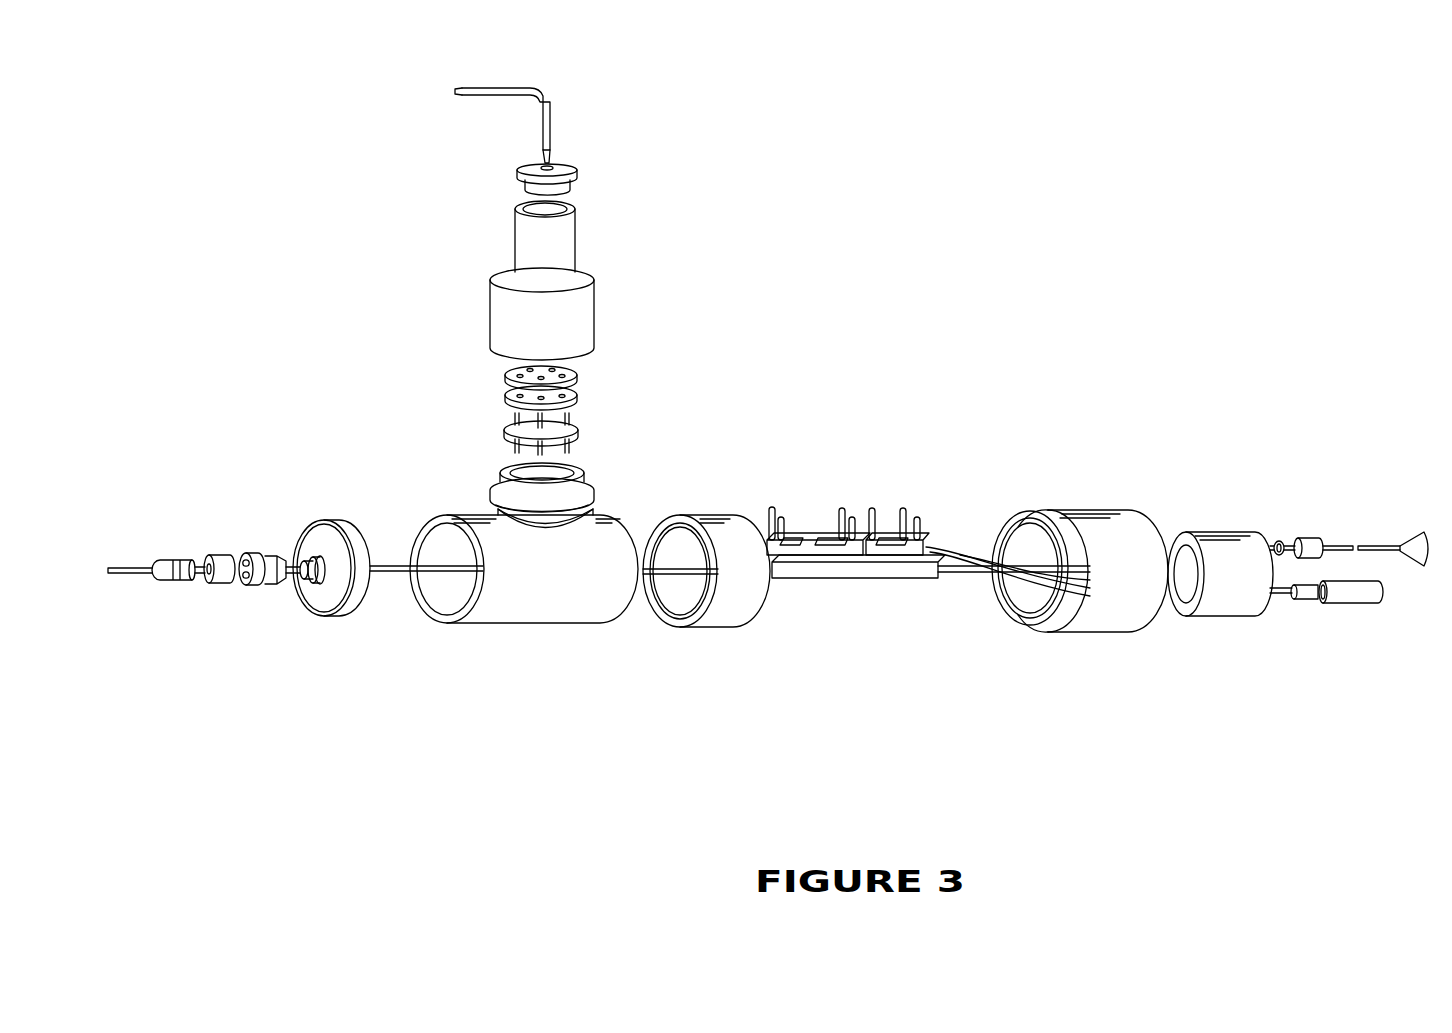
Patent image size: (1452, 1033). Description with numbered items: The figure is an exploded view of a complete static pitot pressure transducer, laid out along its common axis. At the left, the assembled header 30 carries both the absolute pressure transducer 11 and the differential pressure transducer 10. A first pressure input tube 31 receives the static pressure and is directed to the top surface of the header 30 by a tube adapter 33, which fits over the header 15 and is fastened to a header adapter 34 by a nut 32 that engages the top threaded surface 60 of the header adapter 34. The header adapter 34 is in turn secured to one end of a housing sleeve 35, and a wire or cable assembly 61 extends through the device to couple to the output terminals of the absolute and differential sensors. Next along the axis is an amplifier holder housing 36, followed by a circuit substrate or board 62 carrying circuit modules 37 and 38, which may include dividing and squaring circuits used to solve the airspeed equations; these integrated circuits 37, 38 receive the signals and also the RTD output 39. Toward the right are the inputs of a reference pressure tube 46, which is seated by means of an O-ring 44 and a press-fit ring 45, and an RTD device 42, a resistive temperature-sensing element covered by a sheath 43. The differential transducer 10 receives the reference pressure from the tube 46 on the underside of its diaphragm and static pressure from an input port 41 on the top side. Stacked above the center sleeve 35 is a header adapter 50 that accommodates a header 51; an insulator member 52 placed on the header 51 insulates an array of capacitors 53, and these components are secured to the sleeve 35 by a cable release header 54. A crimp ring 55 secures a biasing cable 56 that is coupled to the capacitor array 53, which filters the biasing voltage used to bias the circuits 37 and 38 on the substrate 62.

The differential pressure transducer 10 is at (242, 564).
The absolute pressure transducer 11 is at (245, 581).
The header 15 is at (263, 586).
The assembled header 30 is at (305, 634).
The first pressure input tube 31 is at (130, 576).
The nut 32 is at (178, 583).
The tube adapter 33 is at (215, 553).
The header adapter 34 is at (360, 608).
The housing sleeve 35 is at (487, 622).
The amplifier holder housing 36 is at (710, 626).
The circuit module 37 is at (789, 534).
The circuit module 38 is at (884, 552).
The RTD output 39 is at (972, 583).
The input port 41 is at (1221, 532).
The RTD device 42 is at (1302, 601).
The sheath 43 is at (1362, 605).
The O-ring 44 is at (1280, 540).
The press-fit ring 45 is at (1316, 538).
The reference pressure tube 46 is at (1410, 536).
The header adapter 50 is at (588, 493).
The header 51 is at (575, 429).
The insulator member 52 is at (578, 393).
The array of capacitors 53 is at (508, 378).
The cable release header 54 is at (590, 295).
The crimp ring 55 is at (562, 187).
The biasing cable 56 is at (542, 96).
The top threaded surface 60 is at (354, 604).
The wire or cable assembly 61 is at (396, 562).
The circuit substrate or board 62 is at (802, 580).